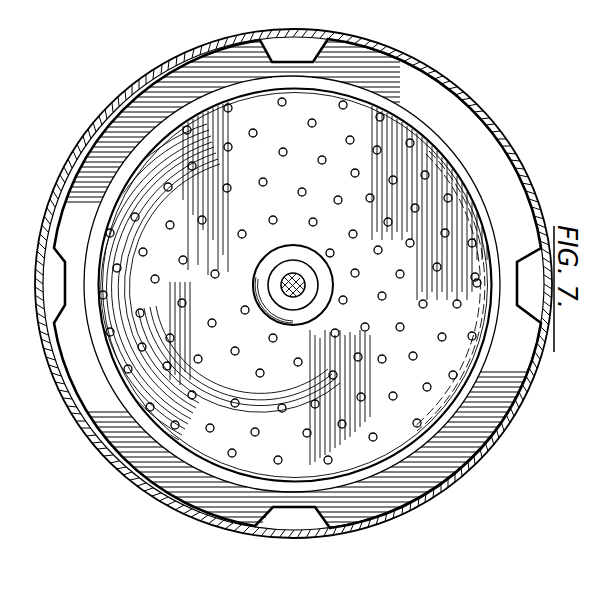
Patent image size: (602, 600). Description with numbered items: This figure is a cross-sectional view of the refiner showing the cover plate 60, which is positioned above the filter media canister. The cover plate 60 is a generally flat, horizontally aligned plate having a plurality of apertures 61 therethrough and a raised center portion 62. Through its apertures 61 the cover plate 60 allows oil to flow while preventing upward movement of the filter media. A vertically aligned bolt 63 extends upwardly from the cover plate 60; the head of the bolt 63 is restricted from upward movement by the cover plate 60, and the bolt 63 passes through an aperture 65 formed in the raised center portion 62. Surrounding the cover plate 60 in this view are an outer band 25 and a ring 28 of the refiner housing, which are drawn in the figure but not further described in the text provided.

The outer rim band 25 is at (300, 537).
The housing ring with notches 28 is at (440, 468).
The cover plate 60 is at (114, 218).
The apertures 61 is at (235, 347).
The raised center portion 62 is at (278, 262).
The bolt 63 is at (295, 275).
The aperture 65 is at (300, 300).